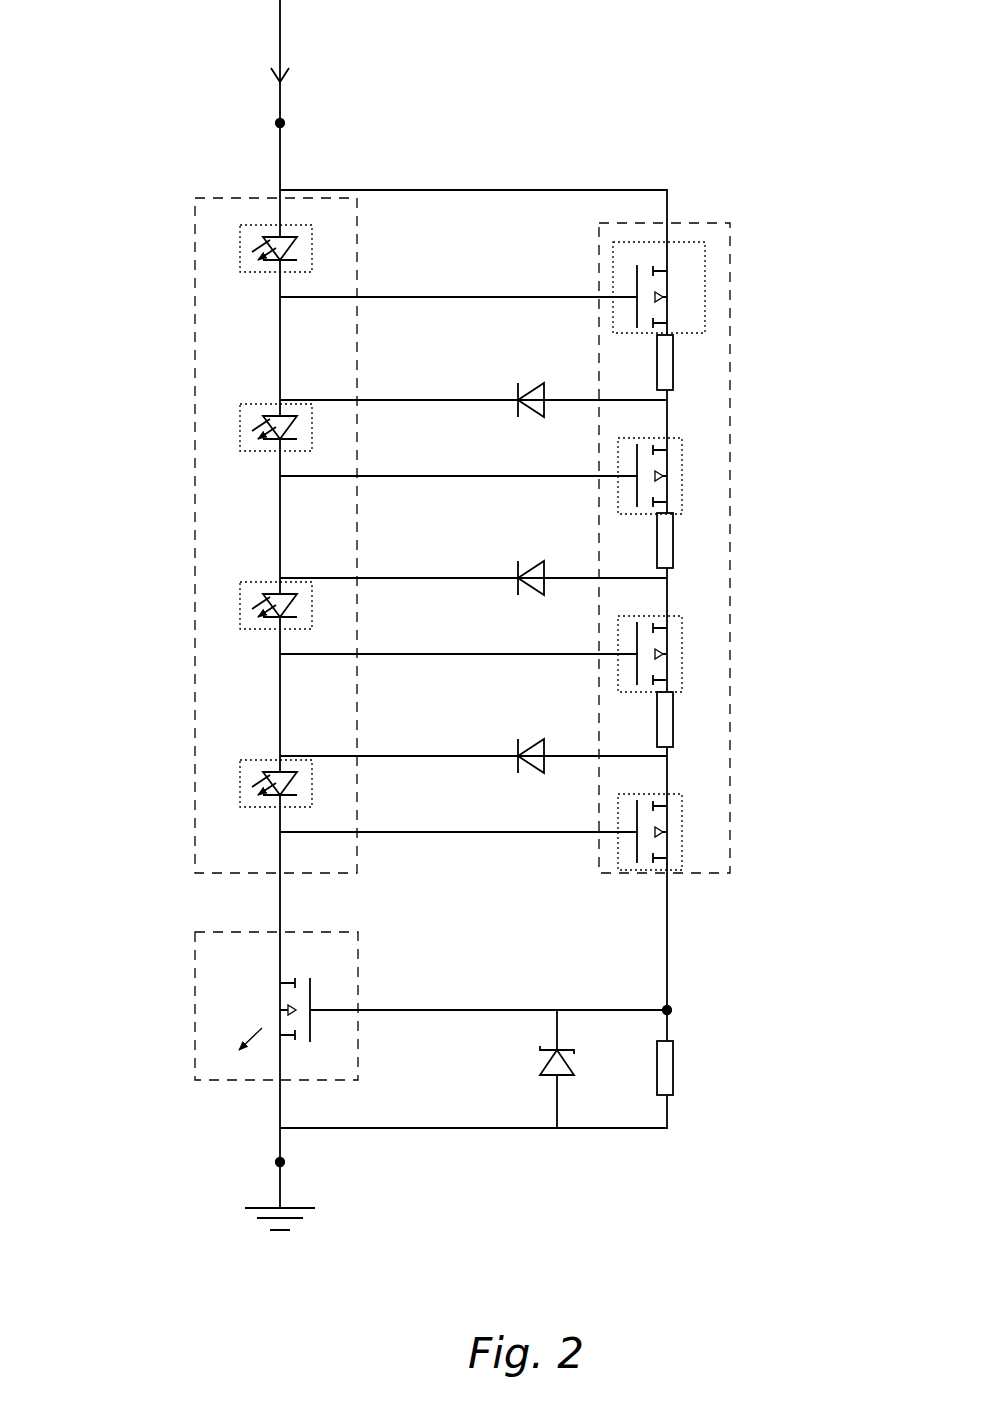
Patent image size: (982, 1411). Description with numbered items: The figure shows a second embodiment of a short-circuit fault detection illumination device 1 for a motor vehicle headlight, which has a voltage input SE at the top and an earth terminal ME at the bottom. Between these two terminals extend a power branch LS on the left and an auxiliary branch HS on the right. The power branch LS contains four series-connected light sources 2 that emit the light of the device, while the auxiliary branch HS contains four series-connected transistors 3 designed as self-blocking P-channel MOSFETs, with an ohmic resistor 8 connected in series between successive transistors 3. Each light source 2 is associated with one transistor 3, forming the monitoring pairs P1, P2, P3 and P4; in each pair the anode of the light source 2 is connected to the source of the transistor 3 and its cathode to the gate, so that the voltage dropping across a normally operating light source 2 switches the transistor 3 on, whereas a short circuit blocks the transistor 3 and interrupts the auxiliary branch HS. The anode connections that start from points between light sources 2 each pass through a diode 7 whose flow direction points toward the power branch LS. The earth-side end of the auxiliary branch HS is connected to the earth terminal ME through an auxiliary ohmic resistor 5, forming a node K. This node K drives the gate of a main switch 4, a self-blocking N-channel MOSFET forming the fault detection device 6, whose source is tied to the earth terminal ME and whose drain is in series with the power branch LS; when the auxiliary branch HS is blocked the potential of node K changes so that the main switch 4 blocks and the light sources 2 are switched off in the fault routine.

The short-circuit fault detection illumination device 1 is at (710, 113).
The light source 2 is at (276, 266).
The transistor 3 is at (667, 282).
The main switch 4 is at (275, 985).
The auxiliary ohmic resistor 5 is at (675, 1068).
The fault detection device 6 is at (364, 1006).
The diode 7 is at (516, 395).
The ohmic resistor 8 is at (675, 365).
The first monitoring pair P1 is at (395, 261).
The second monitoring pair P2 is at (620, 486).
The third monitoring pair P3 is at (618, 677).
The fourth monitoring pair P4 is at (618, 856).
The power branch LS is at (195, 357).
The auxiliary branch HS is at (731, 474).
The voltage input SE is at (260, 123).
The earth terminal ME is at (258, 1162).
The node K is at (675, 997).